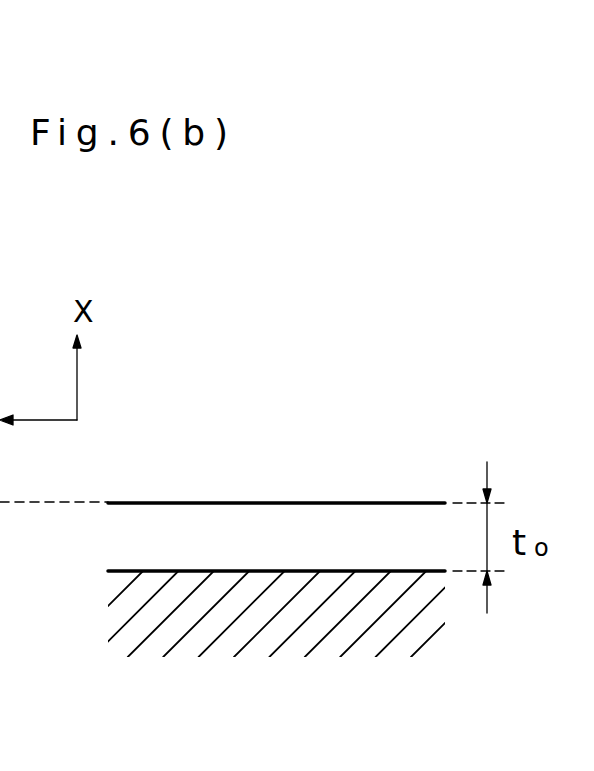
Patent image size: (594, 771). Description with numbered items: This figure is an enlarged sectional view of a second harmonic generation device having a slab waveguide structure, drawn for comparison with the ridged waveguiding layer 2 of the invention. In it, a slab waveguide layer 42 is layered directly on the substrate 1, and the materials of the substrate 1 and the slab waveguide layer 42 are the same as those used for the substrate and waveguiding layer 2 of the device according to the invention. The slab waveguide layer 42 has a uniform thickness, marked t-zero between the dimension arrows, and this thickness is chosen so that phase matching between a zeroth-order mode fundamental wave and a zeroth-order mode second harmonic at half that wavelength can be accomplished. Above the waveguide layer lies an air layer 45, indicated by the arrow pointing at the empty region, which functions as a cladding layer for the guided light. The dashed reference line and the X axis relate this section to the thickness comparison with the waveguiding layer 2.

The substrate 1 is at (133, 632).
The waveguiding layer 2 is at (0, 536).
The slab waveguide layer 42 is at (276, 441).
The air layer 45 is at (385, 454).